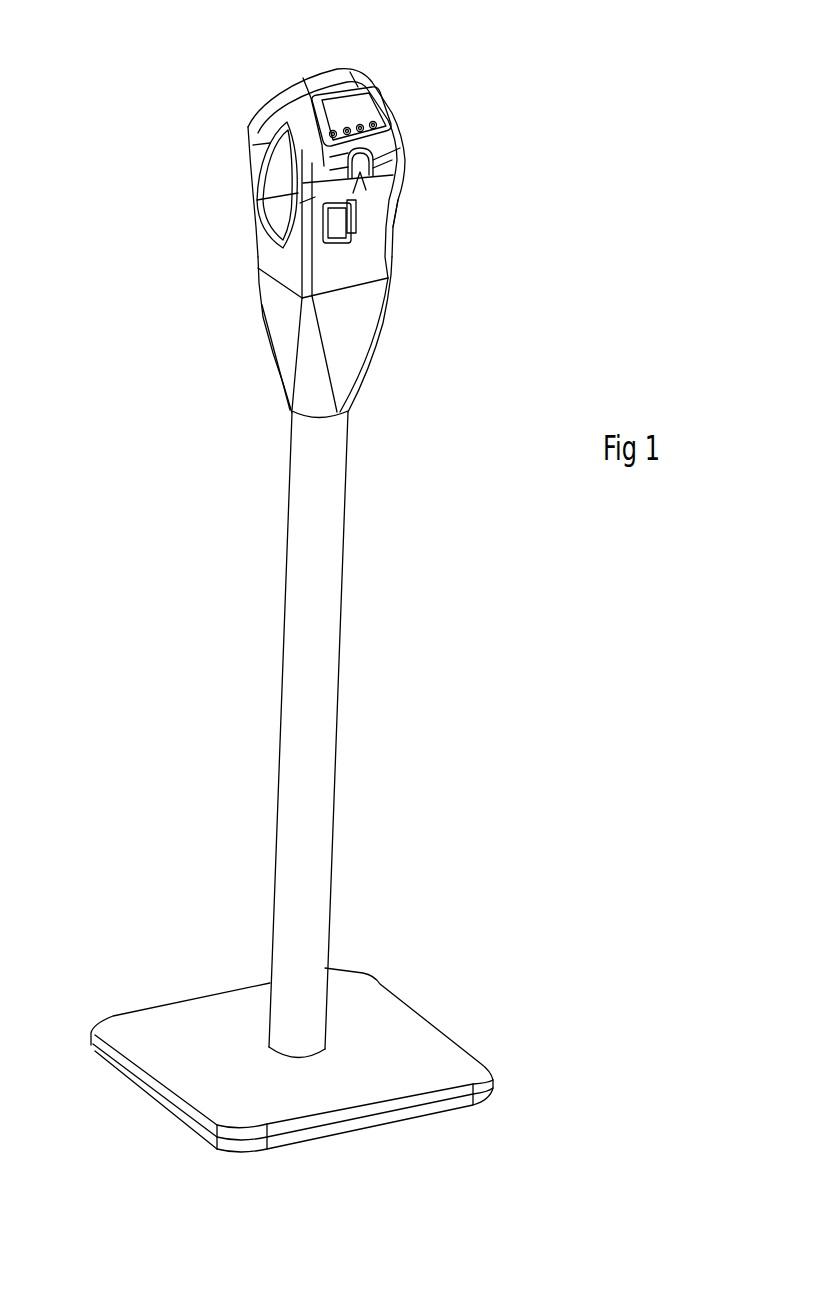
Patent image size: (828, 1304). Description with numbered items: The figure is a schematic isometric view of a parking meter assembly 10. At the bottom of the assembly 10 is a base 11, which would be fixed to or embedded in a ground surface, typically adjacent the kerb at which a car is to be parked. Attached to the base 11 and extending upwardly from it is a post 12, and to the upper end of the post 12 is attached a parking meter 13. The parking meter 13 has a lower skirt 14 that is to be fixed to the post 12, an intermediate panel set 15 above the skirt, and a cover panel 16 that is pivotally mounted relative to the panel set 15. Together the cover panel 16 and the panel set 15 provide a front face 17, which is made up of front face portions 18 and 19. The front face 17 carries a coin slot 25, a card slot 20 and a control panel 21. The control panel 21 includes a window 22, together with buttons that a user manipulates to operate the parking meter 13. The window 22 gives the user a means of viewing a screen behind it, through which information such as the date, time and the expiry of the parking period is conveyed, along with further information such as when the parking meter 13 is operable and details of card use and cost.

The parking meter assembly 10 is at (590, 220).
The base 11 is at (447, 1032).
The post 12 is at (337, 700).
The parking meter 13 is at (167, 383).
The lower skirt 14 is at (367, 363).
The intermediate panel set 15 is at (398, 240).
The cover panel 16 is at (409, 123).
The front face 17 is at (431, 178).
The front face portion 18 is at (393, 103).
The front face portion 19 is at (373, 262).
The card slot 20 is at (402, 160).
The control panel 21 is at (387, 85).
The window 22 is at (345, 108).
The coin slot 25 is at (397, 212).